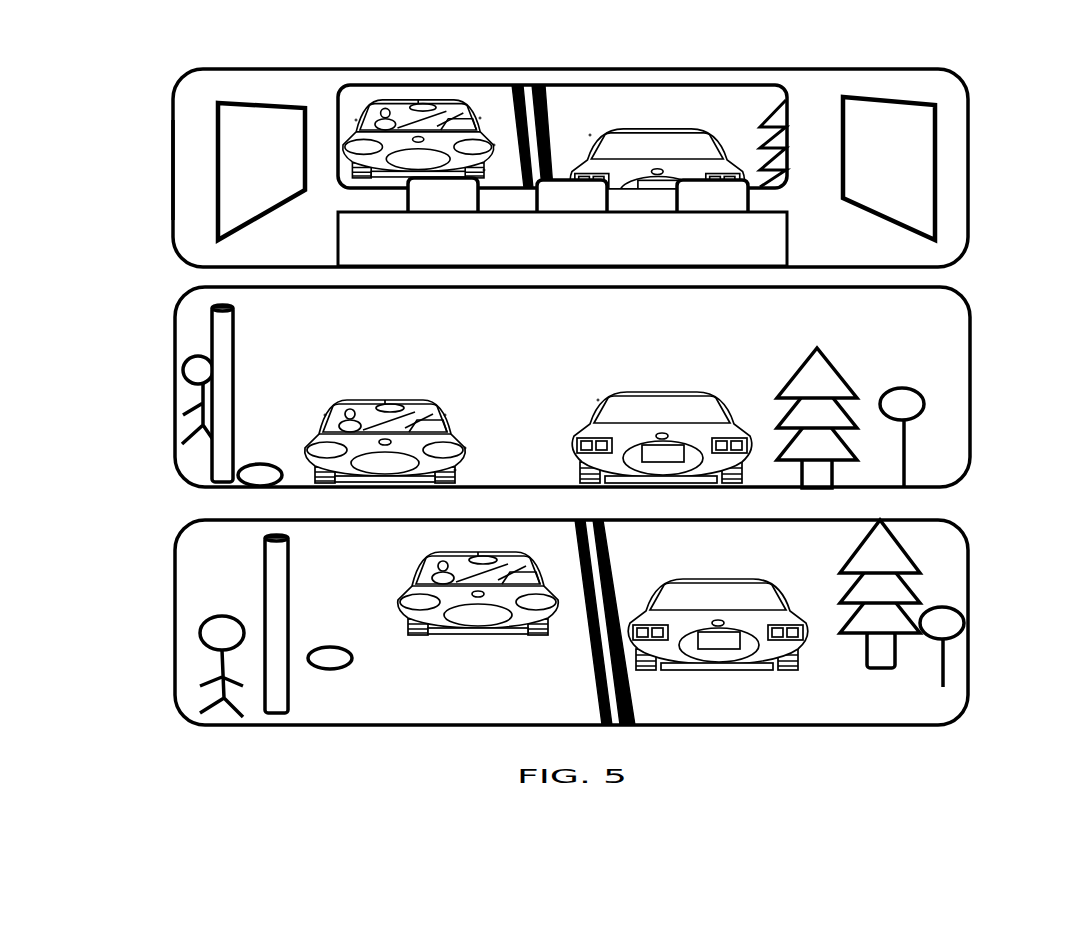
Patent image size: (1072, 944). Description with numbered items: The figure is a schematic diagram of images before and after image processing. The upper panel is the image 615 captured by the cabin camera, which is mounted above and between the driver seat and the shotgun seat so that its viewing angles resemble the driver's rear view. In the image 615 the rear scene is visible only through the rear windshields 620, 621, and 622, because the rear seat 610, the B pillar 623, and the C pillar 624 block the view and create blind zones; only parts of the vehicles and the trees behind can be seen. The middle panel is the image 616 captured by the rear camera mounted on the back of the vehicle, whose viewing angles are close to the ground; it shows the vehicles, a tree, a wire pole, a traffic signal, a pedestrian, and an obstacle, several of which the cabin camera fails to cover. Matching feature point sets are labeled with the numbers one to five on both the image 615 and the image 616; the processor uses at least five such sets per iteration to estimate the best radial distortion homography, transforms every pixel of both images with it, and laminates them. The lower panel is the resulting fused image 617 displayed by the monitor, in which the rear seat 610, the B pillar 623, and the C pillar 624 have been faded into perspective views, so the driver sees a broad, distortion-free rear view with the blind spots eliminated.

The rear seat 610 is at (598, 249).
The image 615 is at (968, 183).
The image 616 is at (970, 387).
The fused image 617 is at (968, 655).
The rear windshield 620 is at (273, 176).
The rear windshield 621 is at (937, 132).
The rear windshield 622 is at (720, 90).
The B pillar 623 is at (200, 177).
The C pillar 624 is at (817, 107).